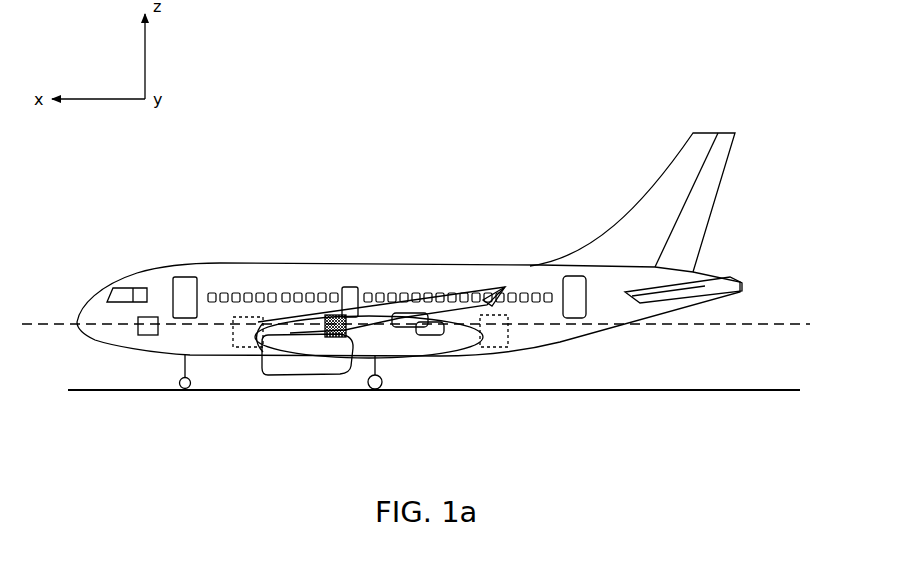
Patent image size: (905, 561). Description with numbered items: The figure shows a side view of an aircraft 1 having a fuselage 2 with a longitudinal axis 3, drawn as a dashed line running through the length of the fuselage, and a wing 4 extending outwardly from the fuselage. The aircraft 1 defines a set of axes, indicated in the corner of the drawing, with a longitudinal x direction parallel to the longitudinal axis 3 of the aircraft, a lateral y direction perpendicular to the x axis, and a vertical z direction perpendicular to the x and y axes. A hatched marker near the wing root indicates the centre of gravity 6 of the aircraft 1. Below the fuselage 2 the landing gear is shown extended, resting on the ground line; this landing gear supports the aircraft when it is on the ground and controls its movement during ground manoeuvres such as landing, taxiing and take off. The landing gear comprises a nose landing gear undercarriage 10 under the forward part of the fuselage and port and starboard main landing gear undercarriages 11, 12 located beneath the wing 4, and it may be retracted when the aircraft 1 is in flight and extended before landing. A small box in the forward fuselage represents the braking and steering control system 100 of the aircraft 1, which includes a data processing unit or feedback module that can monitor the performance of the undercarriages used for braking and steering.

The aircraft 1 is at (399, 283).
The fuselage 2 is at (470, 276).
The longitudinal axis 3 is at (760, 324).
The wing 4 is at (405, 315).
The centre of gravity 6 is at (335, 316).
The nose landing gear undercarriage 10 is at (180, 366).
The port main landing gear undercarriage 11 is at (436, 392).
The starboard main landing gear undercarriage 12 is at (378, 362).
The braking and steering control system 100 is at (148, 335).